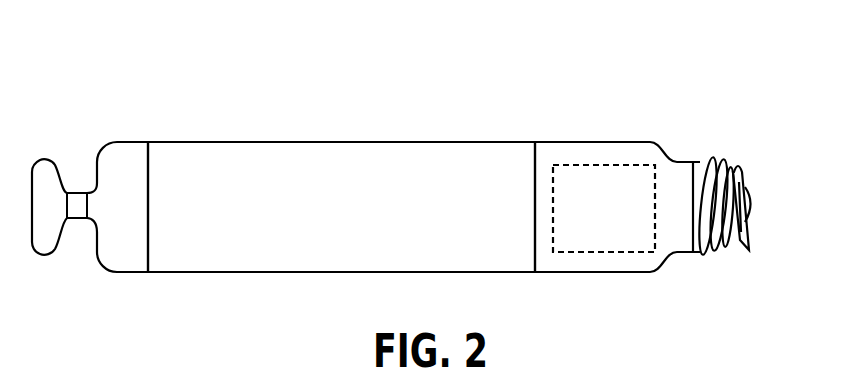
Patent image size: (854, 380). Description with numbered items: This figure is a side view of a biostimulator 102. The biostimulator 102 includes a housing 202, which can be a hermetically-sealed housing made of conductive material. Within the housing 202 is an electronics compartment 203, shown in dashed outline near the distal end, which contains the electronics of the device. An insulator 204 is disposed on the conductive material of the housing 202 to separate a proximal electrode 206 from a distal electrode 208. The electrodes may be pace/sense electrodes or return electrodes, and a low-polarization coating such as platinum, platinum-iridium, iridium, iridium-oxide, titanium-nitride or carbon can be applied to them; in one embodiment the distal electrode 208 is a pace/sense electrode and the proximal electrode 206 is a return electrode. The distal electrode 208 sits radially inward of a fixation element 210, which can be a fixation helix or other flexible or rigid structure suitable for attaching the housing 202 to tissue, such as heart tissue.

The biostimulator 102 is at (436, 167).
The housing 202 is at (578, 141).
The electronics compartment 203 is at (636, 164).
The insulator 204 is at (675, 252).
The proximal electrode 206 is at (288, 141).
The distal electrode 208 is at (755, 201).
The fixation element 210 is at (749, 238).